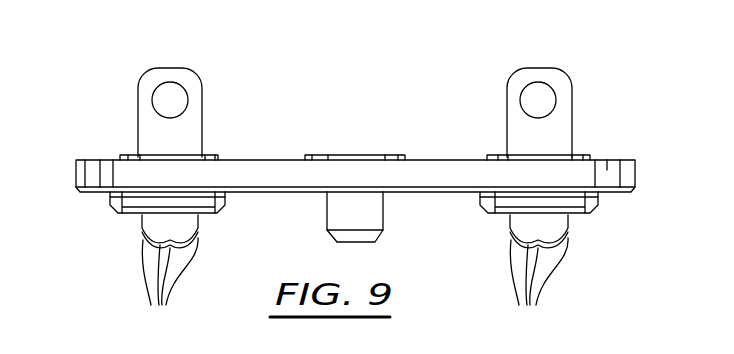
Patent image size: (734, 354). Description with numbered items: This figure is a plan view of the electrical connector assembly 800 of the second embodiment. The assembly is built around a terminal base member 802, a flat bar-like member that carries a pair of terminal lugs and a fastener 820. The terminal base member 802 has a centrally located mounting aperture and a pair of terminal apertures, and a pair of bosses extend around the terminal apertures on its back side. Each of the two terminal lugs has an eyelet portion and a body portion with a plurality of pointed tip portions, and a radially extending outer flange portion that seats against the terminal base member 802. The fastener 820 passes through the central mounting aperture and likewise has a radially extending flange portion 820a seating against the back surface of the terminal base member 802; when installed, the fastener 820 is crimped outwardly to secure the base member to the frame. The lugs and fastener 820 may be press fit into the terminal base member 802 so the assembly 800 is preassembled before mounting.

The electrical connector assembly 800 is at (290, 68).
The terminal base member 802 is at (380, 175).
The fastener 820 is at (388, 205).
The flange portion 820a is at (385, 156).